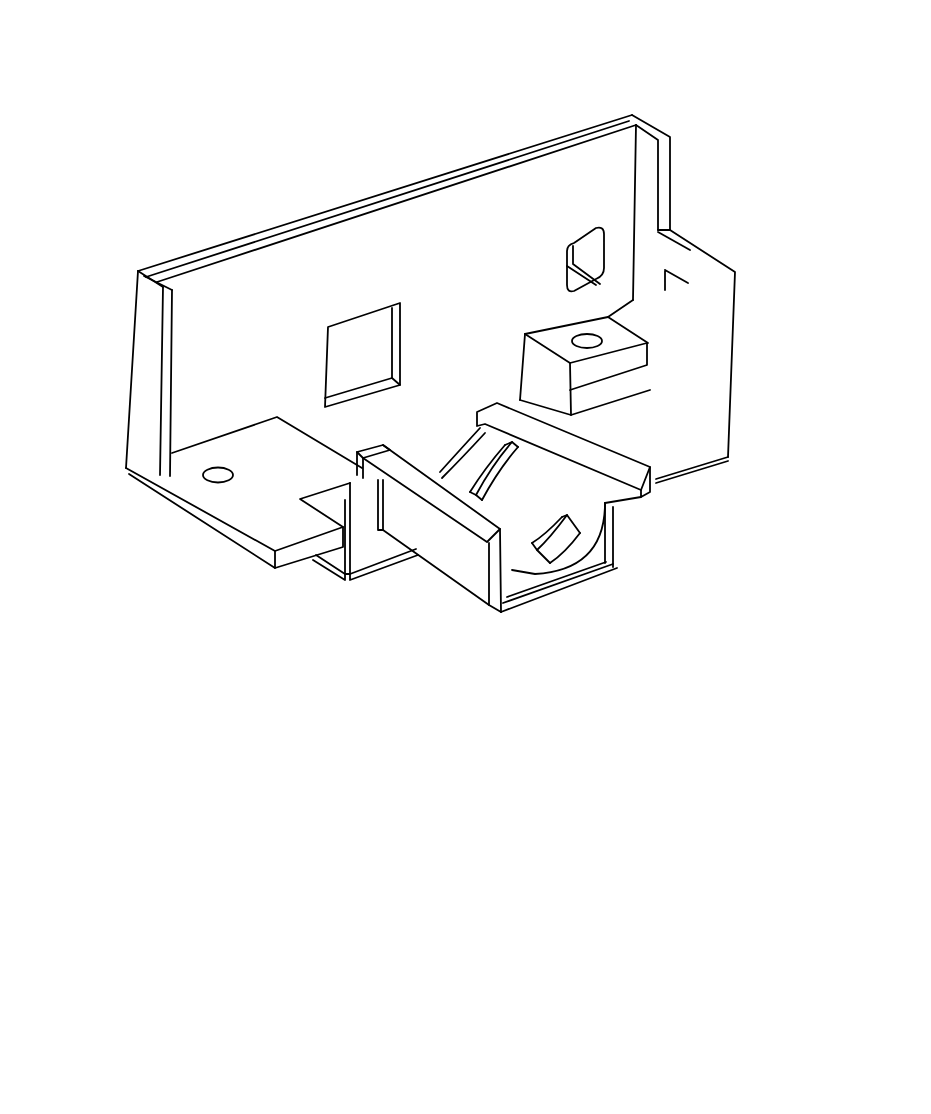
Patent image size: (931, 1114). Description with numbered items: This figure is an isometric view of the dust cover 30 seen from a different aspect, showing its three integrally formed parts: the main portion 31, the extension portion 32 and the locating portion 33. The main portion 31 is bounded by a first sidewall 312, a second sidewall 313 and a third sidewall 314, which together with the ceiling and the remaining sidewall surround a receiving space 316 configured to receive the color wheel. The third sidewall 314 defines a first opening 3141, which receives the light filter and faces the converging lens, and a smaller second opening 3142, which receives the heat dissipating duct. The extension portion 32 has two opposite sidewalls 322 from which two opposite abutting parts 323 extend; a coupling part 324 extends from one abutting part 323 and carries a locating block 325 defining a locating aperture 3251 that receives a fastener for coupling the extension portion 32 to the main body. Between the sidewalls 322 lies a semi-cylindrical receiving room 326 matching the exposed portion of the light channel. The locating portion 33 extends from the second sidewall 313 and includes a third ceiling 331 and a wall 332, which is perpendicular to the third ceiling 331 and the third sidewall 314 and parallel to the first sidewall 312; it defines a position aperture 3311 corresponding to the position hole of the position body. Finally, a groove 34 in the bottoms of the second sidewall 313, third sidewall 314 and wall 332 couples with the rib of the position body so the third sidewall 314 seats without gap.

The dust cover 30 is at (421, 62).
The main portion 31 is at (662, 108).
The first sidewall 312 is at (714, 256).
The second sidewall 313 is at (336, 583).
The third sidewall 314 is at (217, 275).
The first opening 3141 is at (366, 328).
The second opening 3142 is at (585, 243).
The receiving space 316 is at (650, 260).
The extension portion 32 is at (593, 600).
The sidewalls 322 is at (468, 560).
The abutting parts 323 is at (610, 482).
The coupling part 324 is at (553, 388).
The locating block 325 is at (625, 343).
The locating aperture 3251 is at (590, 340).
The receiving room 326 is at (572, 547).
The locating portion 33 is at (200, 533).
The third ceiling 331 is at (267, 523).
The position aperture 3311 is at (218, 477).
The wall 332 is at (142, 428).
The groove 34 is at (613, 122).